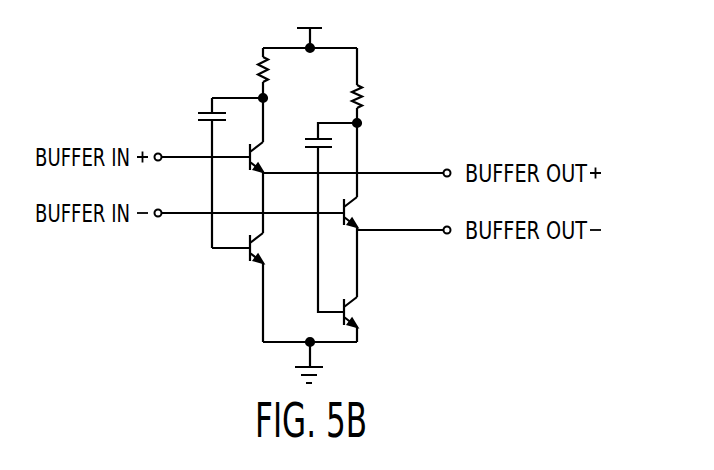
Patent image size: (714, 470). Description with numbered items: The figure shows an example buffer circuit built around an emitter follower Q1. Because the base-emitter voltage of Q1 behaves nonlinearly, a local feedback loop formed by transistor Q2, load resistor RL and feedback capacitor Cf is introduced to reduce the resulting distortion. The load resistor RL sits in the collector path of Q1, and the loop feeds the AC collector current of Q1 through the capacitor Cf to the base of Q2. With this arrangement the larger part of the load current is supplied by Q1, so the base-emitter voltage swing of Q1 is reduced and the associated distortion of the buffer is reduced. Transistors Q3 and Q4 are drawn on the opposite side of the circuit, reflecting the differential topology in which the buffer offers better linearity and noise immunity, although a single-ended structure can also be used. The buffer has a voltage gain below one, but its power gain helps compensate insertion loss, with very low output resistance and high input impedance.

The load resistor RL is at (250, 69).
The feedback capacitor Cf is at (219, 173).
The emitter follower transistor Q1 is at (268, 156).
The feedback transistor Q2 is at (269, 251).
The transistor Q3 is at (363, 214).
The transistor Q4 is at (363, 315).